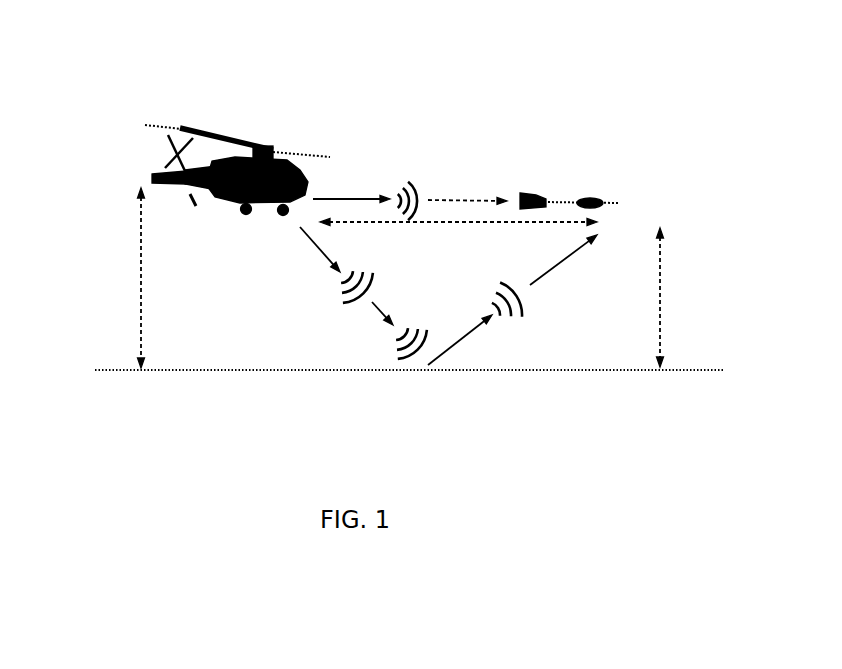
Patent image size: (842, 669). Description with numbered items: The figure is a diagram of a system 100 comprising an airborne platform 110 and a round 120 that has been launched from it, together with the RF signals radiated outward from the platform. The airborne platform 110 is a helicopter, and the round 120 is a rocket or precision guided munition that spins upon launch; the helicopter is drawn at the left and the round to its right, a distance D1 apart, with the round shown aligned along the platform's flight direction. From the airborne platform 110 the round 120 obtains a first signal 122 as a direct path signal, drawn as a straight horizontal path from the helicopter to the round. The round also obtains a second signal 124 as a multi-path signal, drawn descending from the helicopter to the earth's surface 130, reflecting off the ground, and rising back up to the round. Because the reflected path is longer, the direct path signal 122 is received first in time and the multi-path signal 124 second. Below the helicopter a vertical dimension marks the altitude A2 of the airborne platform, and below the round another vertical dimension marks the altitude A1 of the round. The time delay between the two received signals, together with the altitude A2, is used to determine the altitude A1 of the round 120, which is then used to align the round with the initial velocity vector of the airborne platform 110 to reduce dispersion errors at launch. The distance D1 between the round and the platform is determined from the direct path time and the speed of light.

The system 100 is at (551, 96).
The airborne platform 110 is at (257, 145).
The round 120 is at (618, 202).
The first signal 122 is at (327, 197).
The second signal 124 is at (562, 261).
The earth's surface 130 is at (683, 368).
The altitude of the round A1 is at (660, 302).
The altitude of the airborne platform A2 is at (142, 275).
The distance between the round and the airborne platform D1 is at (423, 227).